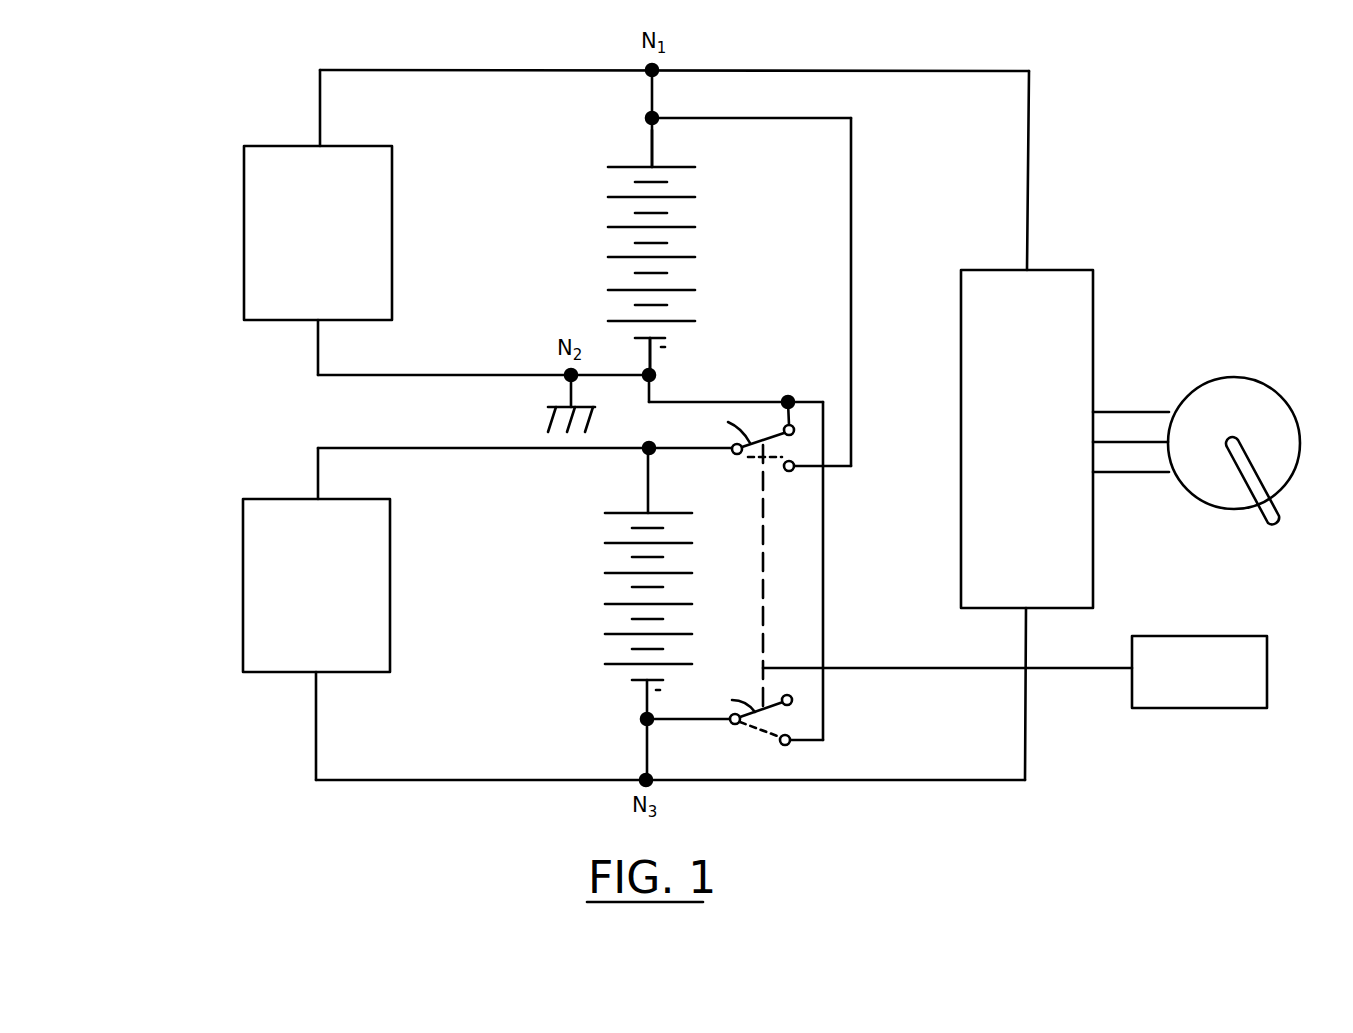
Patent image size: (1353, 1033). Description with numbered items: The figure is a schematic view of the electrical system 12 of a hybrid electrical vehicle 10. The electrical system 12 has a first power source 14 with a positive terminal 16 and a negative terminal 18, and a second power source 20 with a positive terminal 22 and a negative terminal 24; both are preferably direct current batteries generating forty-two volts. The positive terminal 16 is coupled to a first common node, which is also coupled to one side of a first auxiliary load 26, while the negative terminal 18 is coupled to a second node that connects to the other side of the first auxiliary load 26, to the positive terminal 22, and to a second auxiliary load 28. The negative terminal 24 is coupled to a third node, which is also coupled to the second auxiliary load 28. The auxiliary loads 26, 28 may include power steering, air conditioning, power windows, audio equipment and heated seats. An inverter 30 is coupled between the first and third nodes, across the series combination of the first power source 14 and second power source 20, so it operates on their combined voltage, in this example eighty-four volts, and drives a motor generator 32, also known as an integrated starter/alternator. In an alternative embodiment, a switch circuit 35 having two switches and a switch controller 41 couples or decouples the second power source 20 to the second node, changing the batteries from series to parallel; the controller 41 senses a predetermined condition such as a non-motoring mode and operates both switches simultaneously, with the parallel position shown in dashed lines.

The hybrid electrical vehicle 10 is at (1098, 96).
The electrical system 12 is at (1078, 801).
The first power source 14 is at (687, 240).
The positive terminal 16 is at (653, 145).
The negative terminal 18 is at (652, 375).
The second power source 20 is at (614, 584).
The positive terminal 22 is at (650, 479).
The negative terminal 24 is at (640, 697).
The first auxiliary load 26 is at (244, 212).
The second auxiliary load 28 is at (243, 556).
The inverter 30 is at (1075, 267).
The motor generator 32 is at (1252, 377).
The switch circuit 35 is at (803, 560).
The switch controller 41 is at (1232, 634).